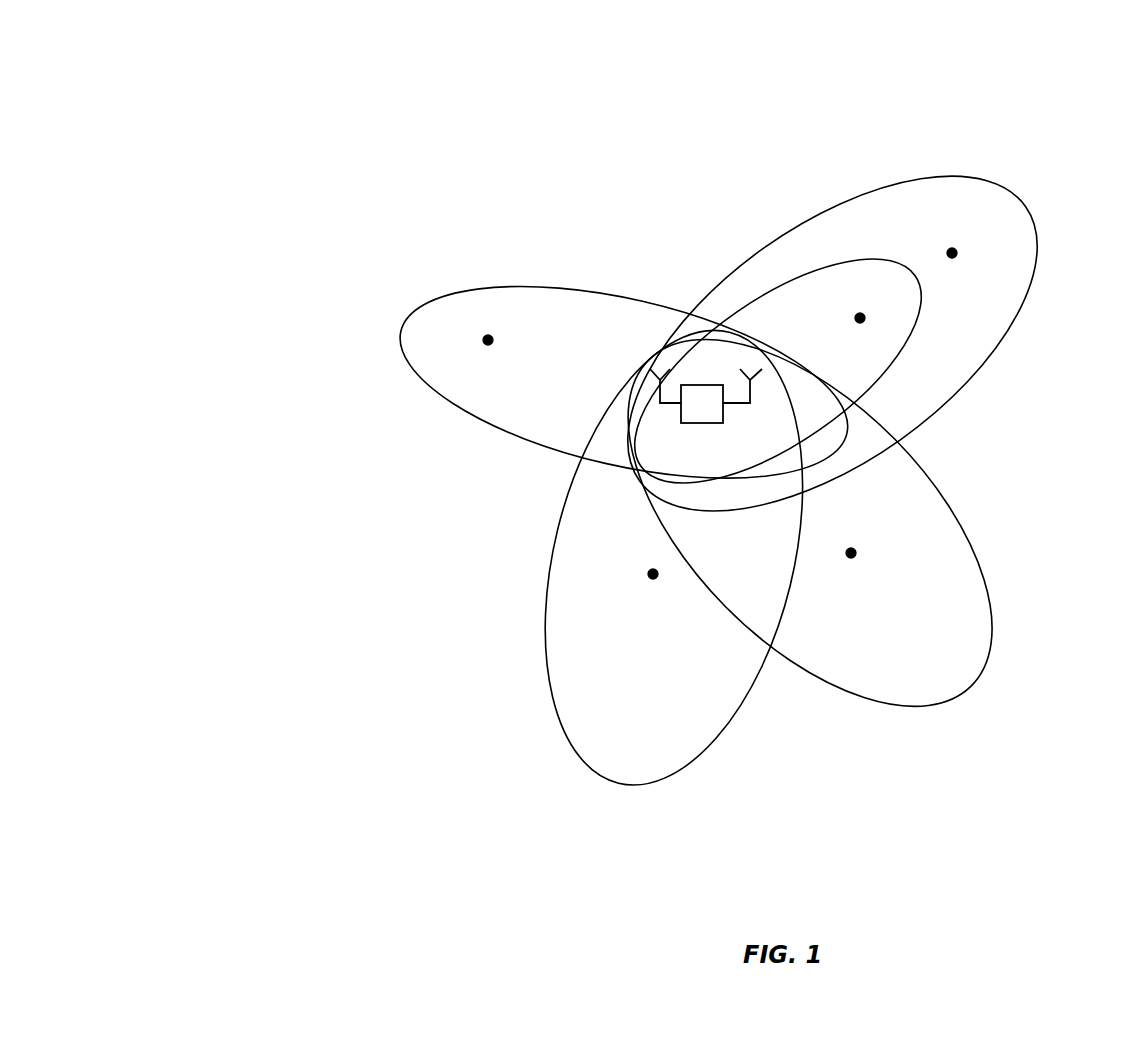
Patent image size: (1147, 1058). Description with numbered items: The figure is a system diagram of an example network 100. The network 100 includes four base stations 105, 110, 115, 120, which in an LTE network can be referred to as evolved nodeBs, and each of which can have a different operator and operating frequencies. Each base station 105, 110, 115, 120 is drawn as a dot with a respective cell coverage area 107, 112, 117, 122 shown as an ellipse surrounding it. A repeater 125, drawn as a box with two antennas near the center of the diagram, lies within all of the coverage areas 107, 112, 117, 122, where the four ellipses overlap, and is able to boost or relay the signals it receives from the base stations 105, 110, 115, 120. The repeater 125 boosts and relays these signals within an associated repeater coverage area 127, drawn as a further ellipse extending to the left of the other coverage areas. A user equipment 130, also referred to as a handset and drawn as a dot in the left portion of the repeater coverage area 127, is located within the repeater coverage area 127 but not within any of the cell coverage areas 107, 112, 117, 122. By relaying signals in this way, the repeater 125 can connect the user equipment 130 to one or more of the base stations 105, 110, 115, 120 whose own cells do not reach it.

The network 100 is at (284, 125).
The base station 105 is at (970, 255).
The cell coverage area 107 is at (1020, 200).
The base station 110 is at (875, 325).
The cell coverage area 112 is at (893, 262).
The base station 115 is at (865, 551).
The cell coverage area 117 is at (943, 494).
The base station 120 is at (640, 573).
The cell coverage area 122 is at (723, 725).
The repeater 125 is at (706, 396).
The repeater coverage area 127 is at (485, 424).
The user equipment 130 is at (467, 333).